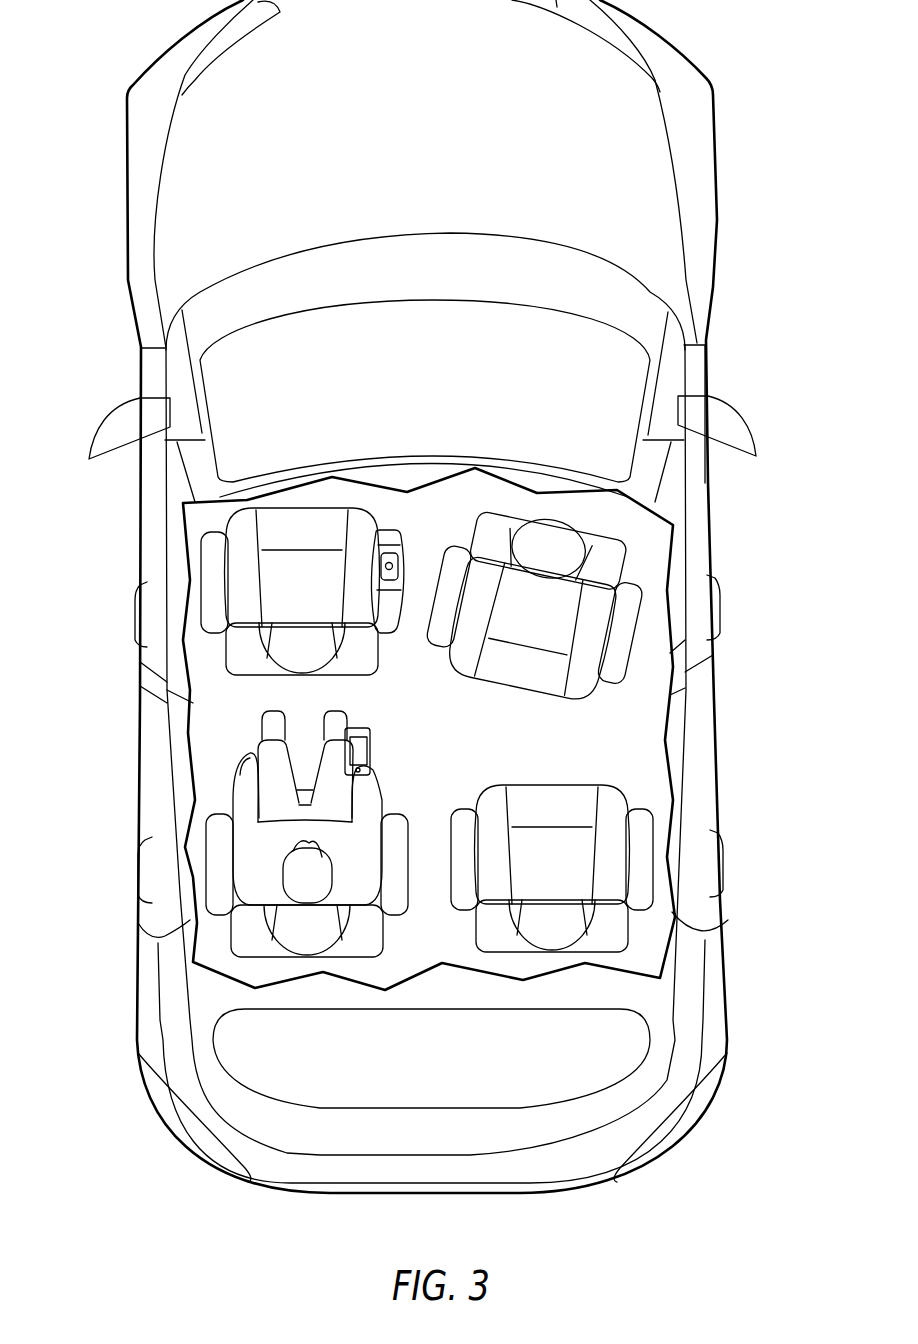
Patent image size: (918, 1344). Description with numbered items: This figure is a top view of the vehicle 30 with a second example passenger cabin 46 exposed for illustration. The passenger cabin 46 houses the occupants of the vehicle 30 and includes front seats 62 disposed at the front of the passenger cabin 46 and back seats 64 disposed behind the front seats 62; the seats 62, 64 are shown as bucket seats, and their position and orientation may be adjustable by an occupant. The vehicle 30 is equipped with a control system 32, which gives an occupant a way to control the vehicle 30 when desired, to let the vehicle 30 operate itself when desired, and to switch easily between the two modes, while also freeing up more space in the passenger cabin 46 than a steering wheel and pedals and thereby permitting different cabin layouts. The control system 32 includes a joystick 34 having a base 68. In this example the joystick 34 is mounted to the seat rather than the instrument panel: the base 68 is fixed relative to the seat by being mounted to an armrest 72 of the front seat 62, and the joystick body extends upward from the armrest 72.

The vehicle 30 is at (78, 45).
The control system 32 is at (416, 519).
The joystick 34 is at (388, 532).
The passenger cabin 46 is at (633, 732).
The front seats 62 is at (358, 677).
The back seats 64 is at (478, 929).
The base 68 is at (401, 566).
The armrest 72 is at (203, 565).